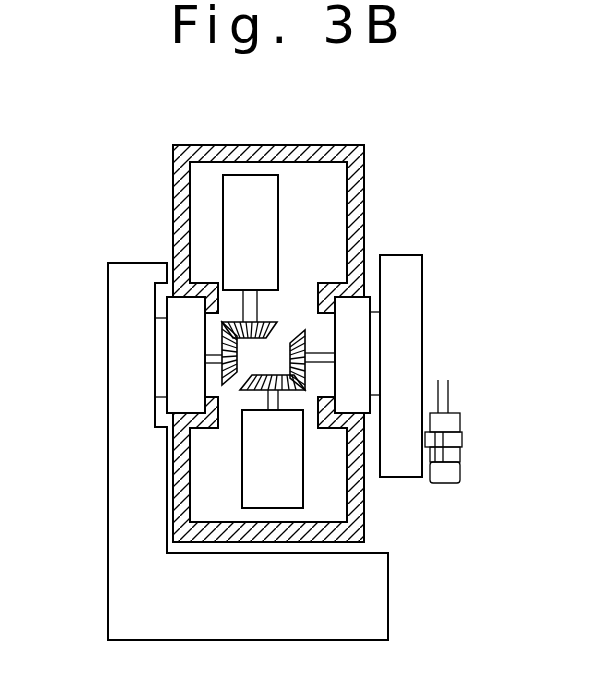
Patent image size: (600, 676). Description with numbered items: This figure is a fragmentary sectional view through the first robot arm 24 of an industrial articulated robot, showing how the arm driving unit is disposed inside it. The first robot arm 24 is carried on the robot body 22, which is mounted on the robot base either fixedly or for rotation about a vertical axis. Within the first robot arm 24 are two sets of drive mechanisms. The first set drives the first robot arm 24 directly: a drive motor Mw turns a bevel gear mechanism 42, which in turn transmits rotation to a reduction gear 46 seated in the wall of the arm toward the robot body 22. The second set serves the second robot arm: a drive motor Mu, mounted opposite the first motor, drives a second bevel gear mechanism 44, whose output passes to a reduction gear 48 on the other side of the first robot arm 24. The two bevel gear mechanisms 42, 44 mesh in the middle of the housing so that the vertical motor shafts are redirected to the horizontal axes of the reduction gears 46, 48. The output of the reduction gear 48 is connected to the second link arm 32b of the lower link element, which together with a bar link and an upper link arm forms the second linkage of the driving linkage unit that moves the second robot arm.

The robot body 22 is at (120, 598).
The first robot arm 24 is at (357, 192).
The drive motor Mw is at (242, 185).
The drive motor Mu is at (250, 468).
The bevel gear mechanism 42 is at (258, 318).
The bevel gear mechanism 44 is at (307, 383).
The reduction gear 46 is at (173, 368).
The reduction gear 48 is at (357, 345).
The second link arm 32b is at (412, 278).